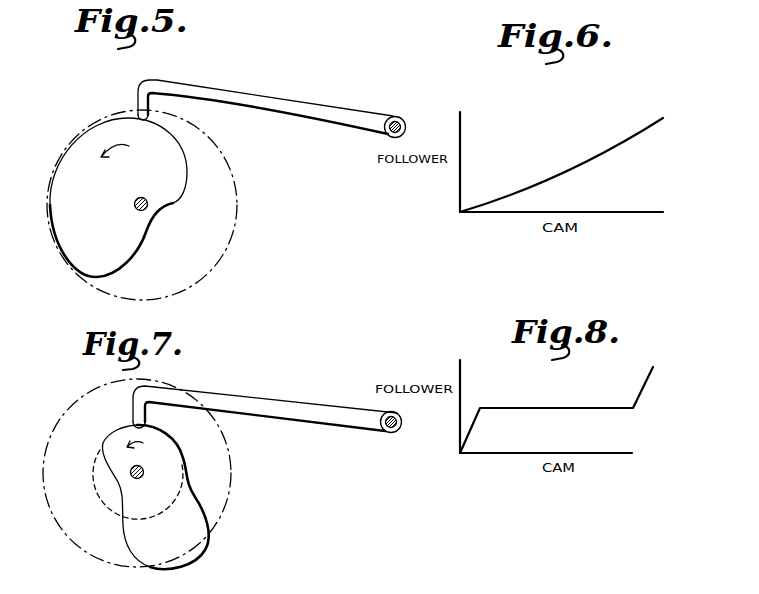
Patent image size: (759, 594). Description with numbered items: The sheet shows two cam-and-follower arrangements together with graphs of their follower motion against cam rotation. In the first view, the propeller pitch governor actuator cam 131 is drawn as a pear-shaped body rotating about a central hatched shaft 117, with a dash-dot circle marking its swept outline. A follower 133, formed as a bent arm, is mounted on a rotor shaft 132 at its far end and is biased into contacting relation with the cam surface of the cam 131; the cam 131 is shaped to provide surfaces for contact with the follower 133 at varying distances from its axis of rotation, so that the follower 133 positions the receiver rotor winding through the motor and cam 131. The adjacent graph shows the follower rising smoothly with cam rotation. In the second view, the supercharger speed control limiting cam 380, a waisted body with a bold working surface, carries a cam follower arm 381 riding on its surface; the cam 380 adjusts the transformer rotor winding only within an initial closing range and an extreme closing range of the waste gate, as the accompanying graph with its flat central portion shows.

In FIG. 5, the cam 131 is at (58, 230).
In FIG. 5, the cam shaft 117 is at (148, 203).
In FIG. 5, the follower 133 is at (228, 93).
In FIG. 5, the rotor shaft 132 is at (400, 118).
In FIG. 7, the cam 380 is at (196, 521).
In FIG. 7, the cam follower arm 381 is at (227, 400).